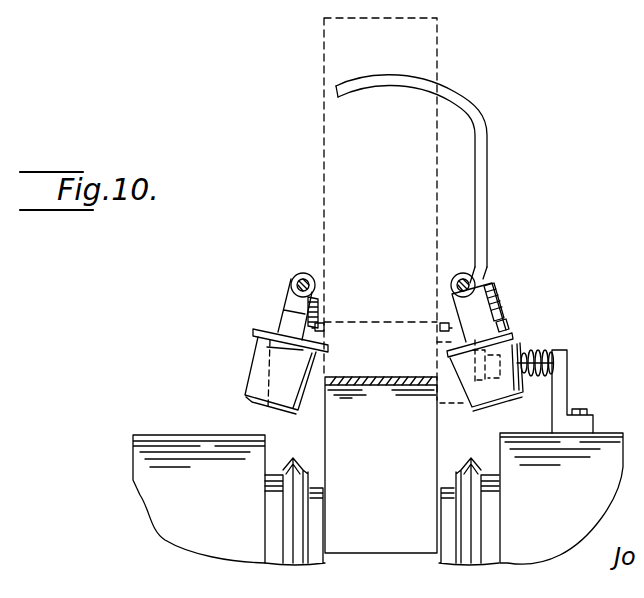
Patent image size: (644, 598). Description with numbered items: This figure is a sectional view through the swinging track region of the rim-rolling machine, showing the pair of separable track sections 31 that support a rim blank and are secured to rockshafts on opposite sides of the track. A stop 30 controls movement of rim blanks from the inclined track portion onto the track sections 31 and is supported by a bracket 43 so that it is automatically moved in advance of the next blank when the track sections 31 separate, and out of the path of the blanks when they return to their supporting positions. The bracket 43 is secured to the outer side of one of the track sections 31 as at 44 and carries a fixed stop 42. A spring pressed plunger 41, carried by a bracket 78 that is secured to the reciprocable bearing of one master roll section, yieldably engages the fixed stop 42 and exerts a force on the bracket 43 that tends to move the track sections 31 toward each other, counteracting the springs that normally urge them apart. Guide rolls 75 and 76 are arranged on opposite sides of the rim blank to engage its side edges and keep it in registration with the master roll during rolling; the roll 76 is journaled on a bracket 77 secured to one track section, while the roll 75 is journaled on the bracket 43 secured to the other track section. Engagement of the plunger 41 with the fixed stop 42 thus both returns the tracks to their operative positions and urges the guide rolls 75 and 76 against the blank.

The stop 30 is at (488, 143).
The track sections 31 is at (445, 322).
The spring pressed plunger 41 is at (534, 351).
The fixed stop 42 is at (508, 322).
The bracket 43 is at (498, 294).
The securing point of bracket to track section 44 is at (484, 278).
The guide roll 75 is at (511, 398).
The guide roll 76 is at (258, 379).
The bracket 77 is at (283, 308).
The bracket 78 is at (562, 392).